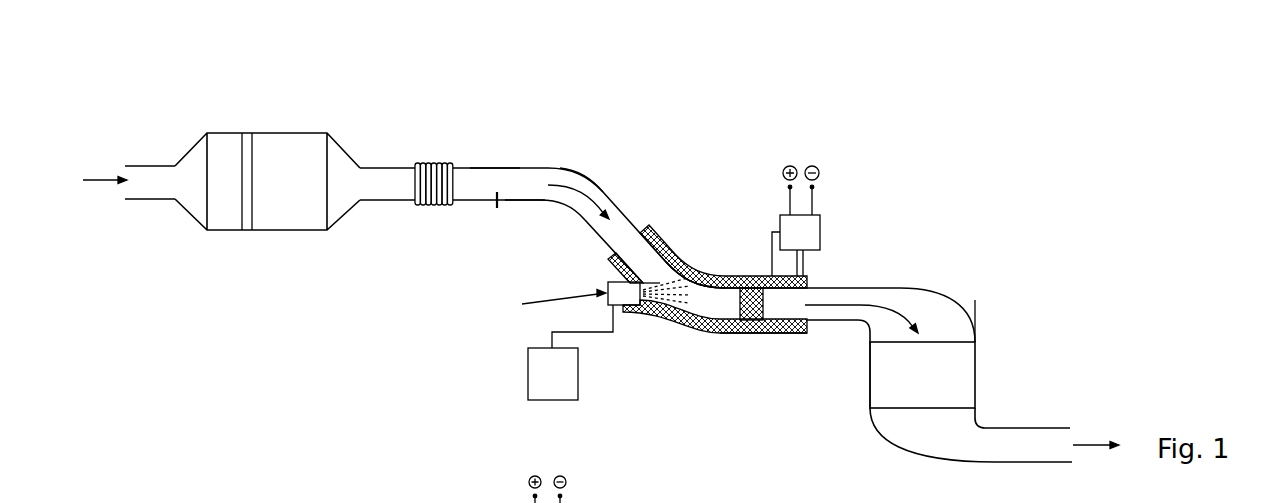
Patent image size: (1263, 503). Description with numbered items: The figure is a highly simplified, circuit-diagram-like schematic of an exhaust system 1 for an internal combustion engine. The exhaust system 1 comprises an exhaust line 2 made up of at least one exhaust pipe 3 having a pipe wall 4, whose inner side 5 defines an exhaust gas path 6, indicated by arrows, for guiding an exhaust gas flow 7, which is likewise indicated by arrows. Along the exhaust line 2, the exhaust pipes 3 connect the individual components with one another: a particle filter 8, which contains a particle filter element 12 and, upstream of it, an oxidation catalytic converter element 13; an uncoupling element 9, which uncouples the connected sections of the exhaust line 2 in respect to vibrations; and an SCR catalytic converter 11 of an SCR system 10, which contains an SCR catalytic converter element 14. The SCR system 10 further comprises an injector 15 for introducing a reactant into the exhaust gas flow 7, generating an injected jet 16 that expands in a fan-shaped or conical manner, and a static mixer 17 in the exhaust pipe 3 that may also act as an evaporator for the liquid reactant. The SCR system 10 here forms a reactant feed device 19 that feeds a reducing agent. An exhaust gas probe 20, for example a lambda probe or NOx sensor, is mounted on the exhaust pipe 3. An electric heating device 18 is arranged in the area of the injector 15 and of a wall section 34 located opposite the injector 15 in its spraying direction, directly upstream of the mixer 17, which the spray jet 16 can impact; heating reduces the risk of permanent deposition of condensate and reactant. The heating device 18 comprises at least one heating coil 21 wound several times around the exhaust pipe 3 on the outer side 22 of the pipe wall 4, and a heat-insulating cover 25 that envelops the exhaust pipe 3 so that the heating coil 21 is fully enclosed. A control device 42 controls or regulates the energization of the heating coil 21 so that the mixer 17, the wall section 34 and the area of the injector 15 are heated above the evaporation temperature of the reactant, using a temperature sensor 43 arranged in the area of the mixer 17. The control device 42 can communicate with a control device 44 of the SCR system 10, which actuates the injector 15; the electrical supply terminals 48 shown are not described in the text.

The exhaust system 1 is at (1020, 216).
The exhaust line 2 is at (671, 171).
The exhaust pipe 3 is at (386, 212).
The pipe wall 4 is at (588, 173).
The inner side 5 is at (492, 168).
The exhaust gas path 6 is at (600, 200).
The exhaust gas flow 7 is at (97, 170).
The particle filter 8 is at (265, 241).
The uncoupling element 9 is at (433, 163).
The SCR system 10 is at (655, 364).
The SCR catalytic converter 11 is at (860, 384).
The particle filter element 12 is at (300, 191).
The oxidation catalytic converter element 13 is at (235, 191).
The SCR catalytic converter element 14 is at (932, 384).
The injector 15 is at (604, 283).
The injected jet 16 is at (664, 286).
The static mixer 17 is at (766, 318).
The electric heating device 18 is at (750, 345).
The reactant feed device 19 is at (548, 305).
The exhaust gas probe 20 is at (497, 212).
The heating coil 21 is at (725, 334).
The outer side 22 is at (528, 205).
The heat-insulating cover 25 is at (707, 333).
The wall section 34 is at (696, 265).
The control device 42 is at (812, 243).
The temperature sensor 43 is at (762, 275).
The control device of the SCR system 44 is at (565, 386).
The power supply terminals 48 is at (506, 489).